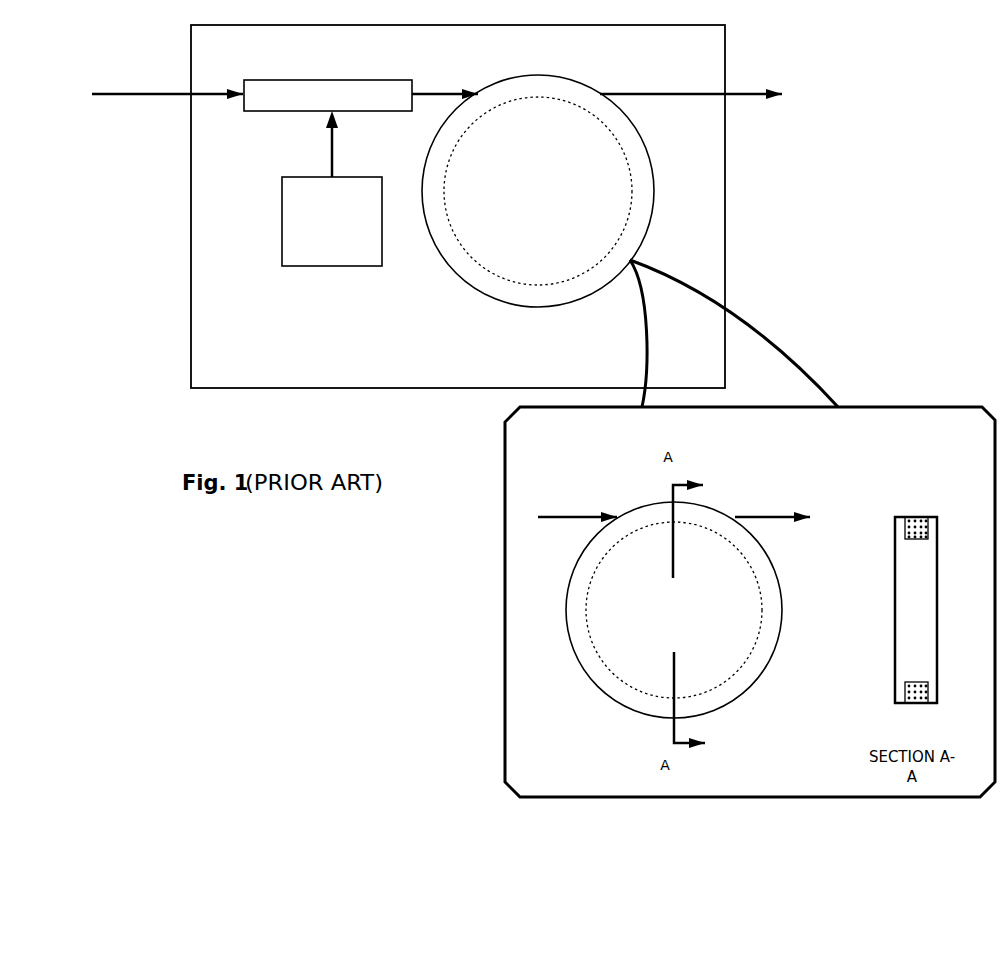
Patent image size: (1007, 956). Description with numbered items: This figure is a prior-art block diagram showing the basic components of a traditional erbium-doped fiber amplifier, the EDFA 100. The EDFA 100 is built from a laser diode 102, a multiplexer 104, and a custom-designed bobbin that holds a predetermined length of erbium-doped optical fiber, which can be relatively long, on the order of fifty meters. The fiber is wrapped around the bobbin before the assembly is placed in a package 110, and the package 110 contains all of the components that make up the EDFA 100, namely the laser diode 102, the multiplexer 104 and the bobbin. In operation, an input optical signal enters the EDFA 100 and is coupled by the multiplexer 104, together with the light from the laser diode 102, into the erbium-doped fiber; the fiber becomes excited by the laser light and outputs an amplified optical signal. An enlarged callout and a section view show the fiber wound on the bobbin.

The EDFA 100 is at (508, 206).
The laser diode 102 is at (323, 266).
The multiplexer 104 is at (330, 78).
The package 110 is at (191, 303).